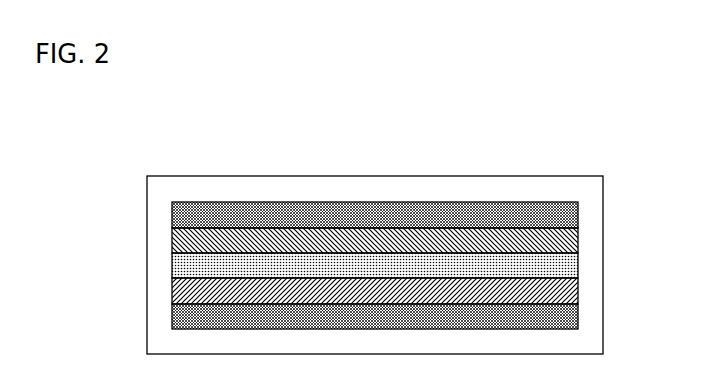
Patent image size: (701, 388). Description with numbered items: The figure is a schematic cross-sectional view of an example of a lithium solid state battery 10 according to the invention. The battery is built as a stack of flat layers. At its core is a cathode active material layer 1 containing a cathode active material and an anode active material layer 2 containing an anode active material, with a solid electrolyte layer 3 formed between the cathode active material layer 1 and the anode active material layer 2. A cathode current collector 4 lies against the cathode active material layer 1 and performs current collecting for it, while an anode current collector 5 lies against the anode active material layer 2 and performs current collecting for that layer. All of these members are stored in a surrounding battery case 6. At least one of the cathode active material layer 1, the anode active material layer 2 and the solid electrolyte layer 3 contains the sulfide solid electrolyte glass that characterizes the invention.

The lithium solid state battery 10 is at (506, 143).
The battery case 6 is at (590, 190).
The cathode current collector 4 is at (575, 211).
The cathode active material layer 1 is at (575, 236).
The solid electrolyte layer 3 is at (562, 265).
The anode active material layer 2 is at (562, 287).
The anode current collector 5 is at (562, 312).